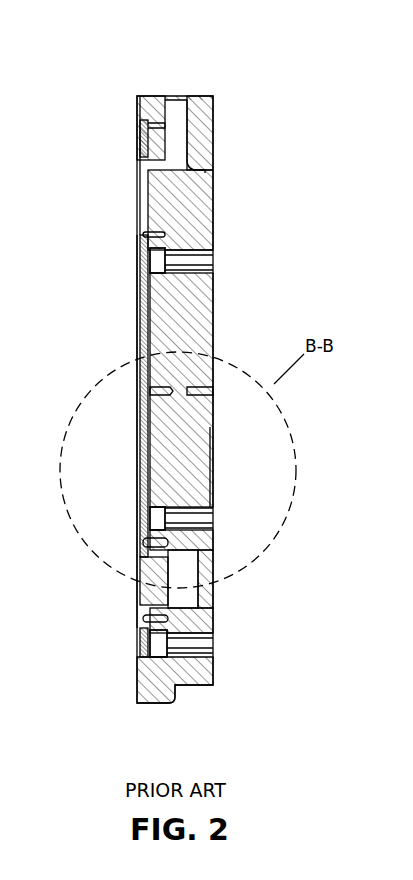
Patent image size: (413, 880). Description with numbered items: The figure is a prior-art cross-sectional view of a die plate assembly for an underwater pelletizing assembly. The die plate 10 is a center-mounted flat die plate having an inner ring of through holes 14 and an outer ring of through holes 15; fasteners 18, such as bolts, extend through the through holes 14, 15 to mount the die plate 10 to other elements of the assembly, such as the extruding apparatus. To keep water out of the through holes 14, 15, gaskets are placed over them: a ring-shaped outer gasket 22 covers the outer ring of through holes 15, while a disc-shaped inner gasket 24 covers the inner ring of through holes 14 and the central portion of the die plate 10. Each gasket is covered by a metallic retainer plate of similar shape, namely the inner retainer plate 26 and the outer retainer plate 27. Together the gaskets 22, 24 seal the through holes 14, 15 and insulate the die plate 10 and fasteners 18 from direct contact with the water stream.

The die plate 10 is at (214, 335).
The through holes 14 is at (212, 285).
The through holes 15 is at (205, 618).
The fasteners 18 is at (193, 258).
The outer gasket 22 is at (150, 128).
The inner gasket 24 is at (140, 302).
The inner retainer plate 26 is at (140, 397).
The outer retainer plate 27 is at (133, 140).